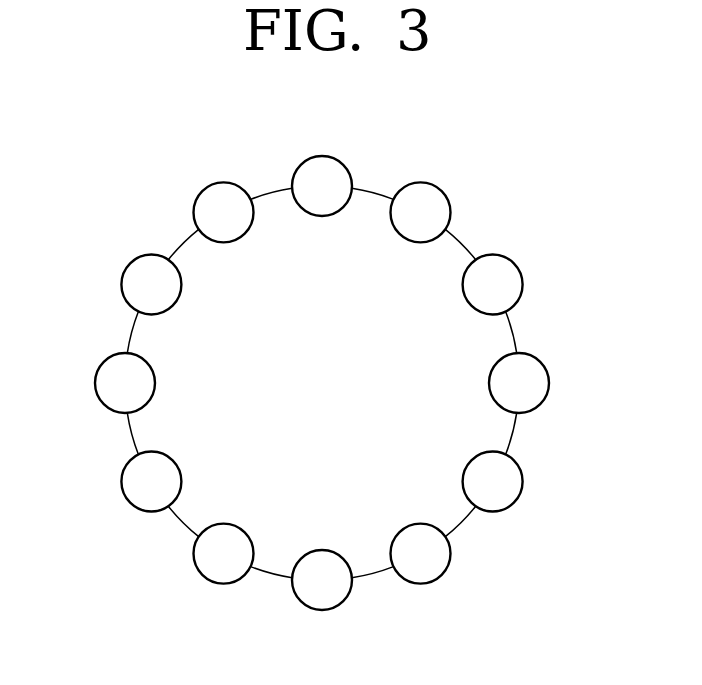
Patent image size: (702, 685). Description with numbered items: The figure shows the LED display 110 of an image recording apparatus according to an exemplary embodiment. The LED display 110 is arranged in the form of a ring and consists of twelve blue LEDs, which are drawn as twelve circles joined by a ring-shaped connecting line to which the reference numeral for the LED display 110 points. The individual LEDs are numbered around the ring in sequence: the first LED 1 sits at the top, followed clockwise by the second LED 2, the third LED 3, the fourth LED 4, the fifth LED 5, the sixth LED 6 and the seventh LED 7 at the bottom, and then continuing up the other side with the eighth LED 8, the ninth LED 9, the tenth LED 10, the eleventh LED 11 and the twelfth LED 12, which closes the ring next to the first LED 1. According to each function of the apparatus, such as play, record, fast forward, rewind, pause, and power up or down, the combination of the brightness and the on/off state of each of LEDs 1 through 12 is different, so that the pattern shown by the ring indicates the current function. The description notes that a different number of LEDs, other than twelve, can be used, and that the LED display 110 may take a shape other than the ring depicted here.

The node 1 is at (322, 170).
The node 2 is at (421, 200).
The node 3 is at (505, 285).
The node 4 is at (531, 383).
The node 5 is at (501, 489).
The node 6 is at (421, 567).
The node 7 is at (322, 597).
The node 8 is at (221, 567).
The node 9 is at (140, 485).
The node 10 is at (106, 383).
The node 11 is at (136, 279).
The node 12 is at (217, 199).
The LED display 110 is at (462, 242).